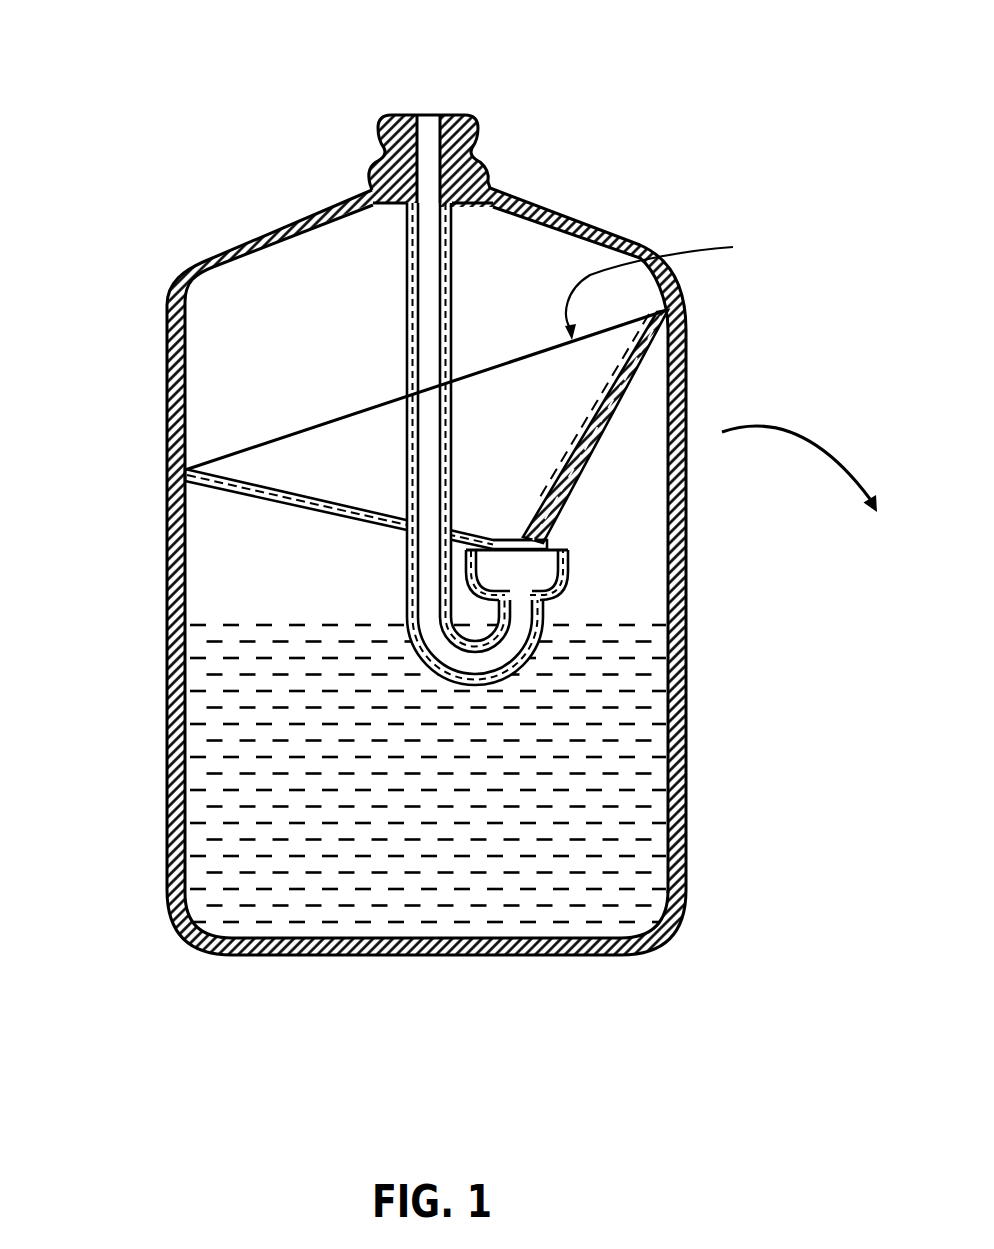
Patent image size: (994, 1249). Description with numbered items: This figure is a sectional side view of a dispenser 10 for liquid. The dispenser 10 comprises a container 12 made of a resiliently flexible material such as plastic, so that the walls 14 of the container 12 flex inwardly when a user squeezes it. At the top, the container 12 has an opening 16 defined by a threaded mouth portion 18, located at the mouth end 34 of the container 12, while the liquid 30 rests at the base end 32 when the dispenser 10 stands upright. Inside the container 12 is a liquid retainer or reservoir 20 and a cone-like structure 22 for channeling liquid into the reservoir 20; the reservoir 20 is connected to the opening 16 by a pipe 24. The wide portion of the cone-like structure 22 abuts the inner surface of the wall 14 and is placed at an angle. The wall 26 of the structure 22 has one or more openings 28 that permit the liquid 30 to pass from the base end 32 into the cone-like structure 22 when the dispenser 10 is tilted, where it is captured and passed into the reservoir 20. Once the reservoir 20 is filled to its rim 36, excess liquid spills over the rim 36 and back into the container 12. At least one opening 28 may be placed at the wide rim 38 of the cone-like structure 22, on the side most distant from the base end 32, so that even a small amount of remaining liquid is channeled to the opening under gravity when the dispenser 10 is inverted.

The dispenser 10 is at (668, 211).
The container 12 is at (688, 672).
The walls 14 is at (687, 543).
The opening 16 is at (428, 88).
The threaded mouth portion 18 is at (494, 139).
The reservoir 20 is at (568, 587).
The cone-like structure 22 is at (640, 366).
The pipe 24 is at (407, 303).
The wall 26 is at (620, 403).
The openings 28 is at (670, 313).
The liquid 30 is at (650, 724).
The base end 32 is at (160, 964).
The mouth end 34 is at (143, 251).
The rim 36 is at (568, 548).
The wide rim 38 is at (665, 286).